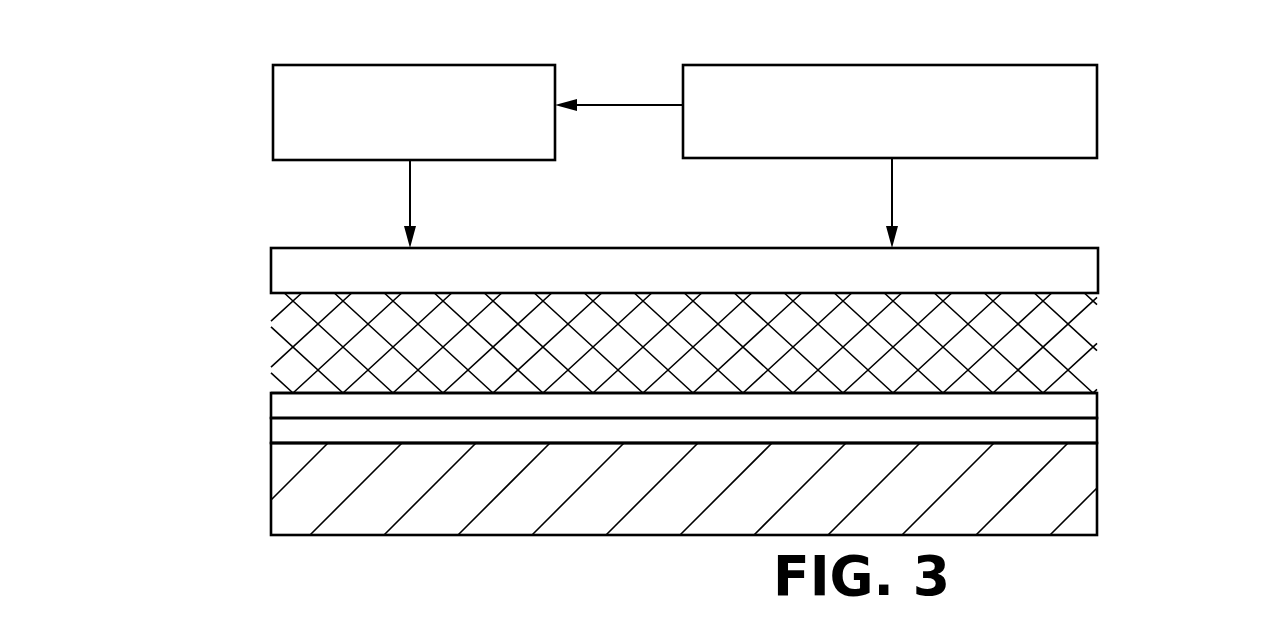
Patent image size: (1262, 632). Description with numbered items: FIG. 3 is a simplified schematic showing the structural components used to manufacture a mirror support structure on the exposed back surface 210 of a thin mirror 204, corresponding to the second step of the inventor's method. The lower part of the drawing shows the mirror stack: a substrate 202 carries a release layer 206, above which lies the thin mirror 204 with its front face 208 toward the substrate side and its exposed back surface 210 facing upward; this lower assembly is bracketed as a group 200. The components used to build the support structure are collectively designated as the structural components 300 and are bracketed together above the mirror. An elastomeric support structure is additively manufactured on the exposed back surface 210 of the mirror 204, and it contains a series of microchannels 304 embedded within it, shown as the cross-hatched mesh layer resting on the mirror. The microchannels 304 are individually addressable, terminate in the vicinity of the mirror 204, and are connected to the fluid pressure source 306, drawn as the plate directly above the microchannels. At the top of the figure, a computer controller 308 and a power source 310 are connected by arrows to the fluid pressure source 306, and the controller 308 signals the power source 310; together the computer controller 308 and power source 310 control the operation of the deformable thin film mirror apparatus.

The power source 310 is at (468, 65).
The computer controller 308 is at (1008, 64).
The fluid pressure source 306 is at (1098, 250).
The microchannels 304 is at (1108, 387).
The exposed back surface of mirror 210 is at (1107, 388).
The thin mirror 204 is at (1098, 403).
The front face of mirror 208 is at (1083, 422).
The release layer 206 is at (1098, 433).
The substrate 202 is at (1050, 519).
The structural components 300 is at (257, 60).
The film stack 200 is at (248, 404).